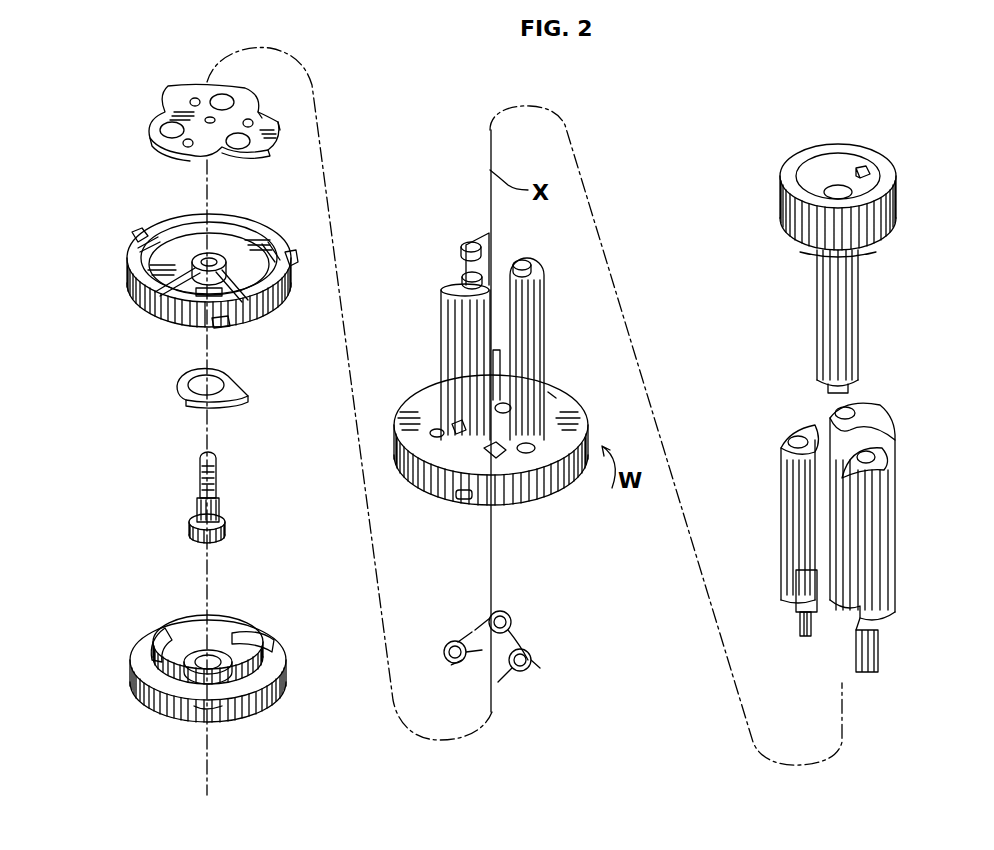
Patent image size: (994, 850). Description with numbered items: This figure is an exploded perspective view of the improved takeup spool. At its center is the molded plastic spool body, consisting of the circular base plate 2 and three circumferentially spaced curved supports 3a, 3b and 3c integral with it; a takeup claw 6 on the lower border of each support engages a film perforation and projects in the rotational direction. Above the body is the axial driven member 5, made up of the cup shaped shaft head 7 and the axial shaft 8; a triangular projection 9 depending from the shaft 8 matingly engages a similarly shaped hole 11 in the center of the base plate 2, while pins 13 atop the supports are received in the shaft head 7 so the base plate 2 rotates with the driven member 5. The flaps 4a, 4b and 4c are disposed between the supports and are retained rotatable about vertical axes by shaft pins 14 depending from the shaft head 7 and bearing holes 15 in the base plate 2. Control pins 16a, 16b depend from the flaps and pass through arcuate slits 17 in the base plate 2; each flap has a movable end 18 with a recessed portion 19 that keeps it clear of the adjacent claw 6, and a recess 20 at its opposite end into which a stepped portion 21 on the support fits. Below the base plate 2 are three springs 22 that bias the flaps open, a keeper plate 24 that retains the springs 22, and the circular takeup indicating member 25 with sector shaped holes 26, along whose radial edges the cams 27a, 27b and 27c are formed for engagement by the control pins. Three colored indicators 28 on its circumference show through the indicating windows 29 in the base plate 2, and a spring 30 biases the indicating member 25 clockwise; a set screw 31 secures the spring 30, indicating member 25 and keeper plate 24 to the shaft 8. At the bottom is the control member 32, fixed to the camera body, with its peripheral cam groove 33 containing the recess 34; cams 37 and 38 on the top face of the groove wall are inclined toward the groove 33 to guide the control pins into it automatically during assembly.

The base plate 2 is at (530, 492).
The support 3a is at (450, 328).
The support 3b is at (478, 233).
The support 3c is at (546, 318).
The flap 4a is at (885, 506).
The flap 4b is at (795, 478).
The flap 4c is at (875, 425).
The driven member 5 is at (851, 268).
The takeup claw 6 is at (456, 434).
The shaft head 7 is at (885, 182).
The shaft 8 is at (846, 342).
The triangular projection 9 is at (828, 390).
The hole 11 is at (492, 380).
The pin 13 is at (462, 245).
The shaft pin 14 is at (878, 250).
The bearing hole 15 is at (435, 430).
The control pin 16a is at (878, 658).
The control pin 16b is at (800, 640).
The arcuate slit 17 is at (486, 454).
The movable end 18 is at (848, 520).
The recessed portion 19 is at (838, 630).
The recess 20 is at (800, 592).
The stepped portion 21 is at (556, 398).
The spring 22 is at (448, 642).
The keeper plate 24 is at (235, 88).
The takeup indicating member 25 is at (214, 250).
The sector shaped hole 26 is at (160, 244).
The cam 27a is at (245, 232).
The cam 27b is at (175, 285).
The cam 27c is at (238, 318).
The indicator 28 is at (136, 234).
The indicating window 29 is at (462, 500).
The spring 30 is at (250, 398).
The set screw 31 is at (222, 510).
The control member 32 is at (215, 705).
The cam groove 33 is at (198, 636).
The recess 34 is at (210, 712).
The cam 37 is at (256, 636).
The cam 38 is at (165, 668).